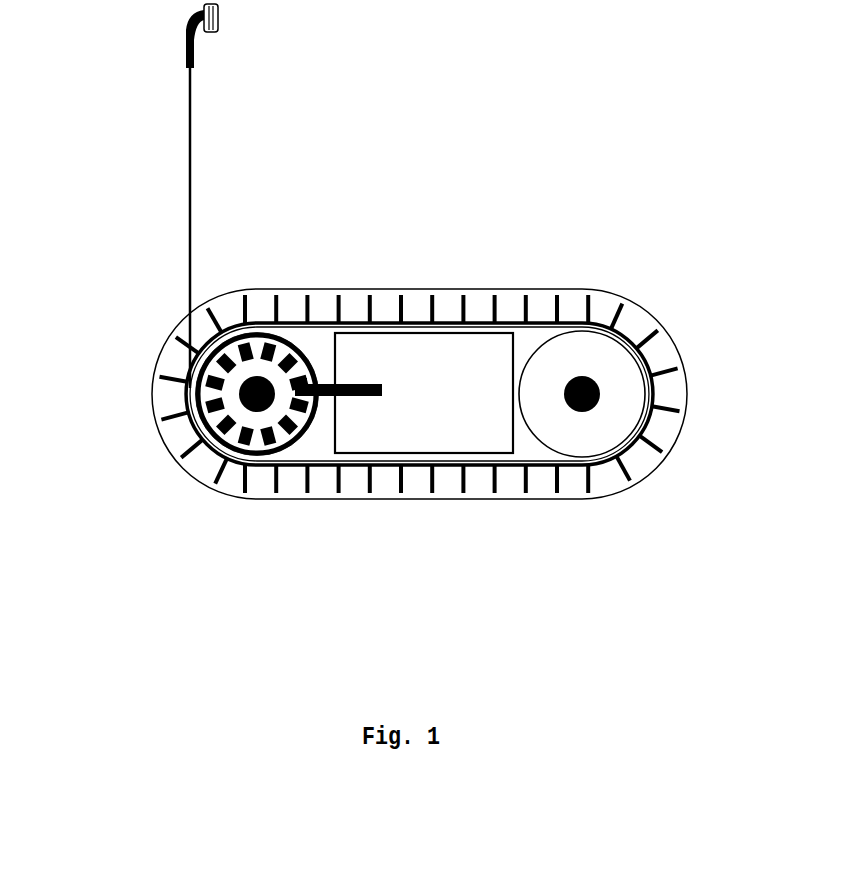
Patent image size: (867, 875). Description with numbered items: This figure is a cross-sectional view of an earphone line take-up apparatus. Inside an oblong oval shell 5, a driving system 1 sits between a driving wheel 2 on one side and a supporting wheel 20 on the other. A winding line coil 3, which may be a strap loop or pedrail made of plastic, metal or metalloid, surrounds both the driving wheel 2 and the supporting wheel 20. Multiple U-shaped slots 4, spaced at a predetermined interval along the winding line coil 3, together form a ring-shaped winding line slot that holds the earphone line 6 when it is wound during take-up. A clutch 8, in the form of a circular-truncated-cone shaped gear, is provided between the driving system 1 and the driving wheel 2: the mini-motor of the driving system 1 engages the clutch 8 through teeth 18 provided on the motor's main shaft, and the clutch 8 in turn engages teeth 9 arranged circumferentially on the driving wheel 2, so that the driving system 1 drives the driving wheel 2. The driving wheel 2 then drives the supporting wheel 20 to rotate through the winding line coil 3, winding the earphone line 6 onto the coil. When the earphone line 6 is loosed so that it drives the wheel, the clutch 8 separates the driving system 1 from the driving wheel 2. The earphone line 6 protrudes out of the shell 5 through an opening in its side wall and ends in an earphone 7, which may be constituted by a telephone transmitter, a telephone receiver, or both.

The driving system 1 is at (433, 368).
The driving wheel 2 is at (228, 370).
The winding line coil 3 is at (377, 325).
The U-shaped slots 4 is at (531, 304).
The shell 5 is at (686, 412).
The earphone line 6 is at (188, 141).
The earphone 7 is at (187, 40).
The clutch 8 is at (300, 382).
The teeth 9 is at (303, 368).
The teeth 18 is at (315, 402).
The supporting wheel 20 is at (603, 362).